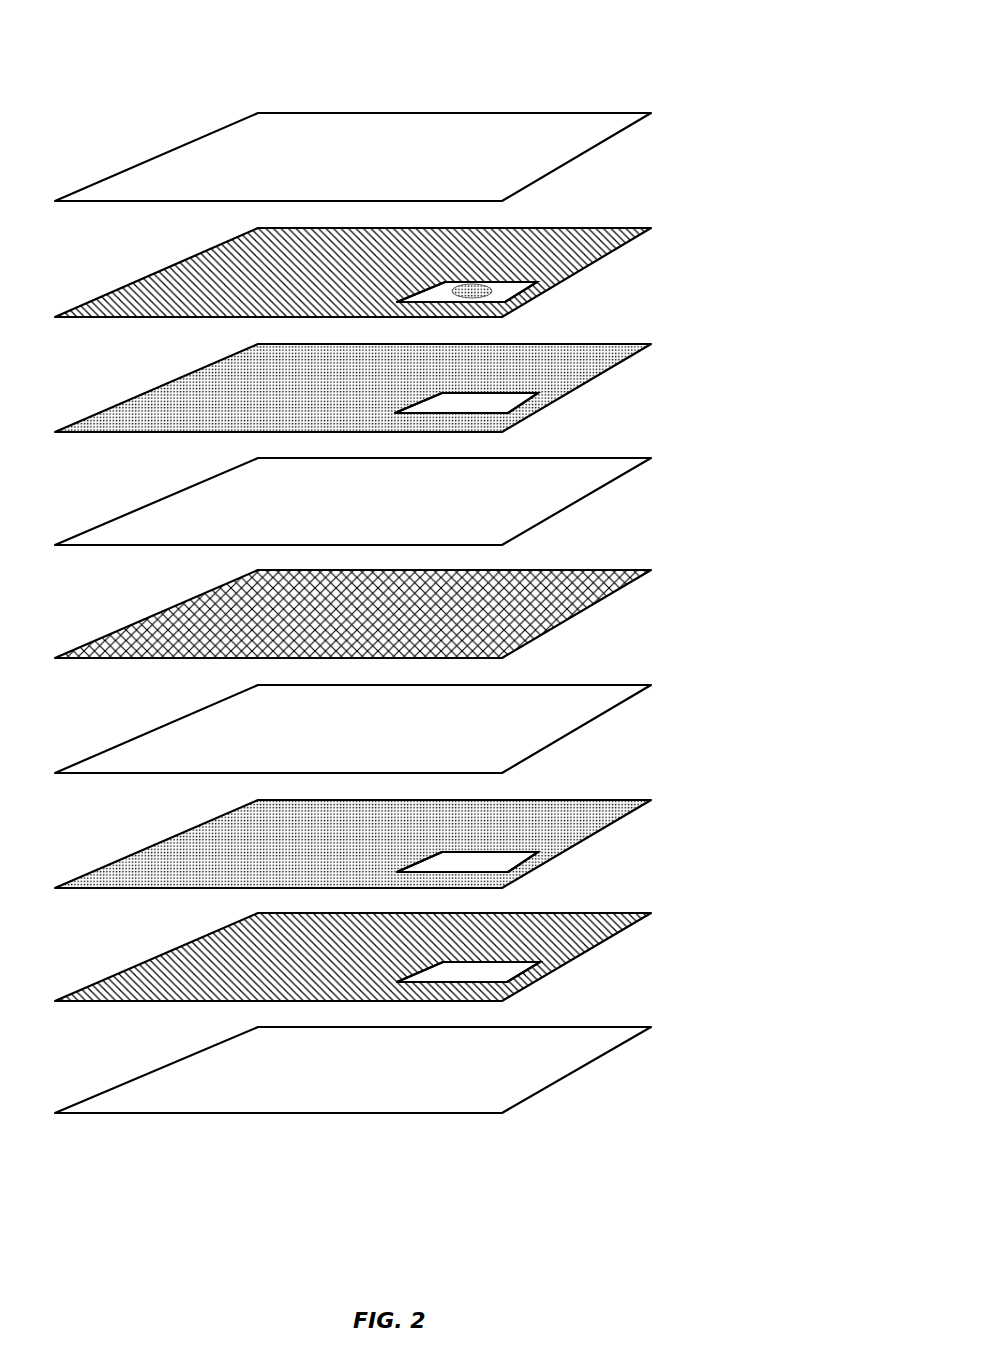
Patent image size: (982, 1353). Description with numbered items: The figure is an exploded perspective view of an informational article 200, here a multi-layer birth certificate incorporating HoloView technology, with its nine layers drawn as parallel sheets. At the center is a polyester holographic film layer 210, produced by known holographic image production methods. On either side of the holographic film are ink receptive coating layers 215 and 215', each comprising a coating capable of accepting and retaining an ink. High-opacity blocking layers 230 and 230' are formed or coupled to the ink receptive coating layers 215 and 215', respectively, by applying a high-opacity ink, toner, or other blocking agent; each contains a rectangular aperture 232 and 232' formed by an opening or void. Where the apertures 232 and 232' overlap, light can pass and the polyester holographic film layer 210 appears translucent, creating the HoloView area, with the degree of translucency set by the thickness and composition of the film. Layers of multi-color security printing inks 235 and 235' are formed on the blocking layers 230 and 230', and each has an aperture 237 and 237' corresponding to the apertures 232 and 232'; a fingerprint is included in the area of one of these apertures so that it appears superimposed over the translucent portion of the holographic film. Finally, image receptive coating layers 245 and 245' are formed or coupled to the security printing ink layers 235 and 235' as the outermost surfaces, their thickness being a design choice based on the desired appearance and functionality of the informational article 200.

The informational article 200 is at (131, 30).
The image receptive coating layer 245 is at (411, 157).
The layer of security printing inks 235 is at (408, 272).
The aperture 237 is at (559, 309).
The high-opacity blocking layer 230 is at (415, 388).
The rectangular aperture 232 is at (558, 421).
The ink receptive coating layer 215 is at (411, 501).
The polyester holographic film layer 210 is at (580, 615).
The ink receptive coating layer 215' is at (408, 729).
The high-opacity blocking layer 230' is at (410, 844).
The rectangular aperture 232' is at (562, 878).
The layer of security printing inks 235' is at (411, 957).
The aperture 237' is at (560, 990).
The image receptive coating layer 245' is at (407, 1070).